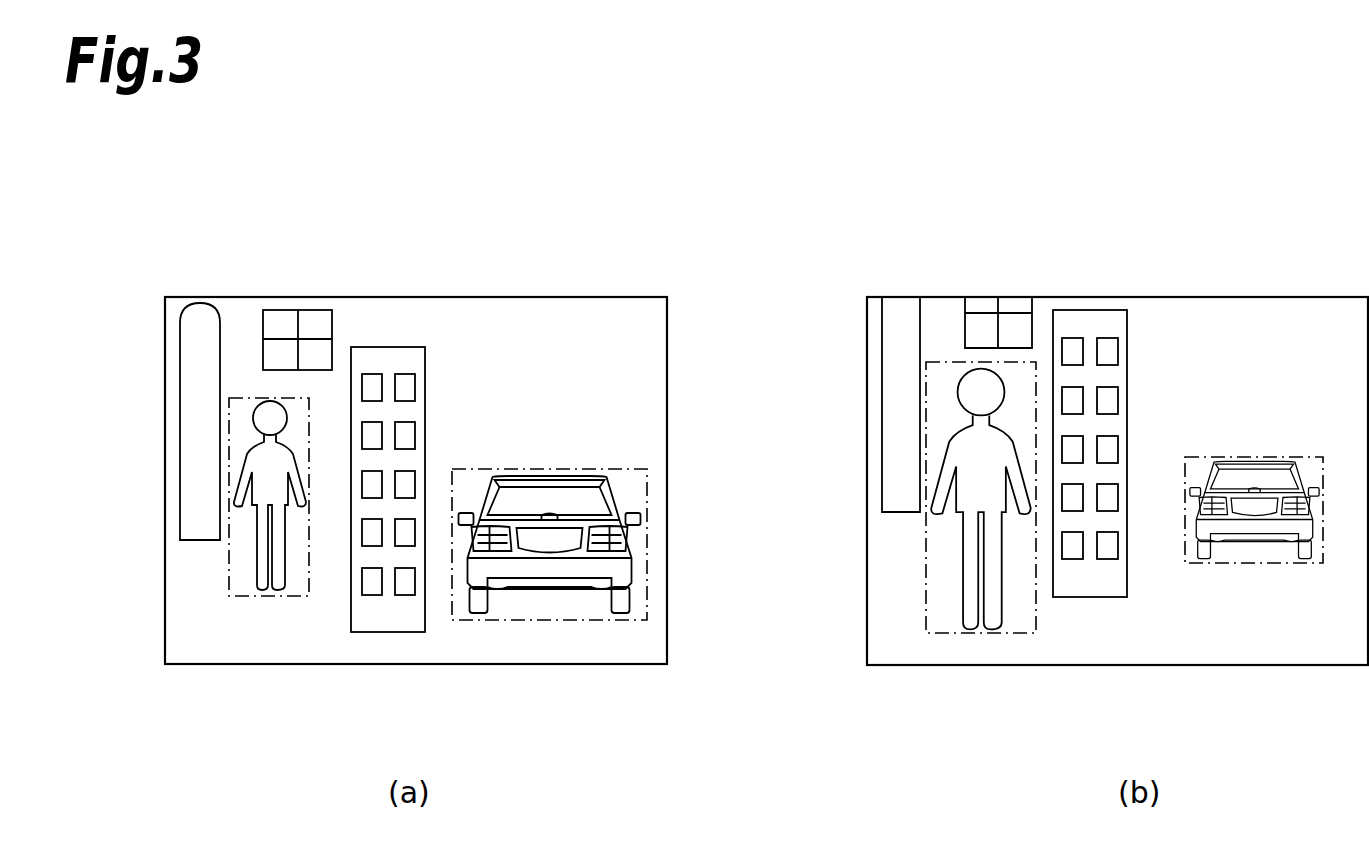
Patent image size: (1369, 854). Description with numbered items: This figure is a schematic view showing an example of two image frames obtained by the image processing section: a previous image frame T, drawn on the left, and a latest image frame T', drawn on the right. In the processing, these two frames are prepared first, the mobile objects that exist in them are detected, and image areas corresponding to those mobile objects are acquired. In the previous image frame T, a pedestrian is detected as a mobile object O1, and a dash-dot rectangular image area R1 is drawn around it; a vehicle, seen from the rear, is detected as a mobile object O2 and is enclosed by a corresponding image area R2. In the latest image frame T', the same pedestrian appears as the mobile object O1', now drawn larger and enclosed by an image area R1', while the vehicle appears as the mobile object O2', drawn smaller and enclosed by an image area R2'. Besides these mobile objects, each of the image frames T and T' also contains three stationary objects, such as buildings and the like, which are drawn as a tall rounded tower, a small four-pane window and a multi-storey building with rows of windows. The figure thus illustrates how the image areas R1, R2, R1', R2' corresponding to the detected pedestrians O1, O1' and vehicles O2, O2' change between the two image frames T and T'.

The previous image frame T is at (416, 437).
The latest image frame T' is at (1117, 437).
The mobile object (pedestrian) O1 is at (238, 501).
The mobile object (pedestrian) O1' is at (918, 499).
The mobile object (vehicle) O2 is at (550, 513).
The mobile object (vehicle) O2' is at (1257, 475).
The image area R1 is at (281, 531).
The image area R1' is at (1024, 502).
The image area R2 is at (549, 508).
The image area R2' is at (1245, 469).